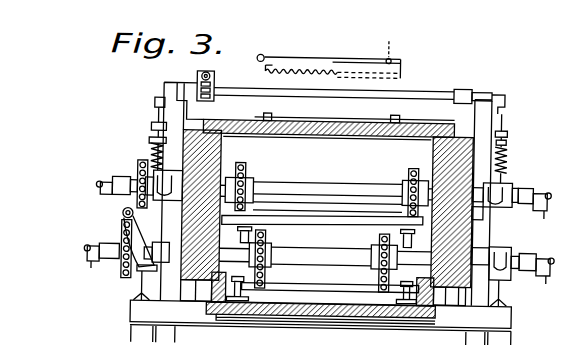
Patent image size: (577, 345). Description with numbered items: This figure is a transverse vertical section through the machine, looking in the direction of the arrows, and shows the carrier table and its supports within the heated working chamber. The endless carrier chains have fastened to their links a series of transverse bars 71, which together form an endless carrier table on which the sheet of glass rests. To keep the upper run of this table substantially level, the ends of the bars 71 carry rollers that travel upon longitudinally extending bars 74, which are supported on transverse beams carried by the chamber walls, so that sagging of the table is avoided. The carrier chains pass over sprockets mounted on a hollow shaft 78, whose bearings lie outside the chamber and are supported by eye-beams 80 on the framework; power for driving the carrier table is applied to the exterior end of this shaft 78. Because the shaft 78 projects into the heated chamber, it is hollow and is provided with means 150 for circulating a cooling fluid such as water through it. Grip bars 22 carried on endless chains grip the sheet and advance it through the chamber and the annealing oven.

The grip bars 22 is at (322, 220).
The transverse bars 71 is at (327, 223).
The hollow shaft 78 is at (338, 257).
The longitudinally extending bars 74 is at (240, 236).
The cooling fluid circulating means 150 is at (103, 192).
The eye-beams 80 is at (143, 301).